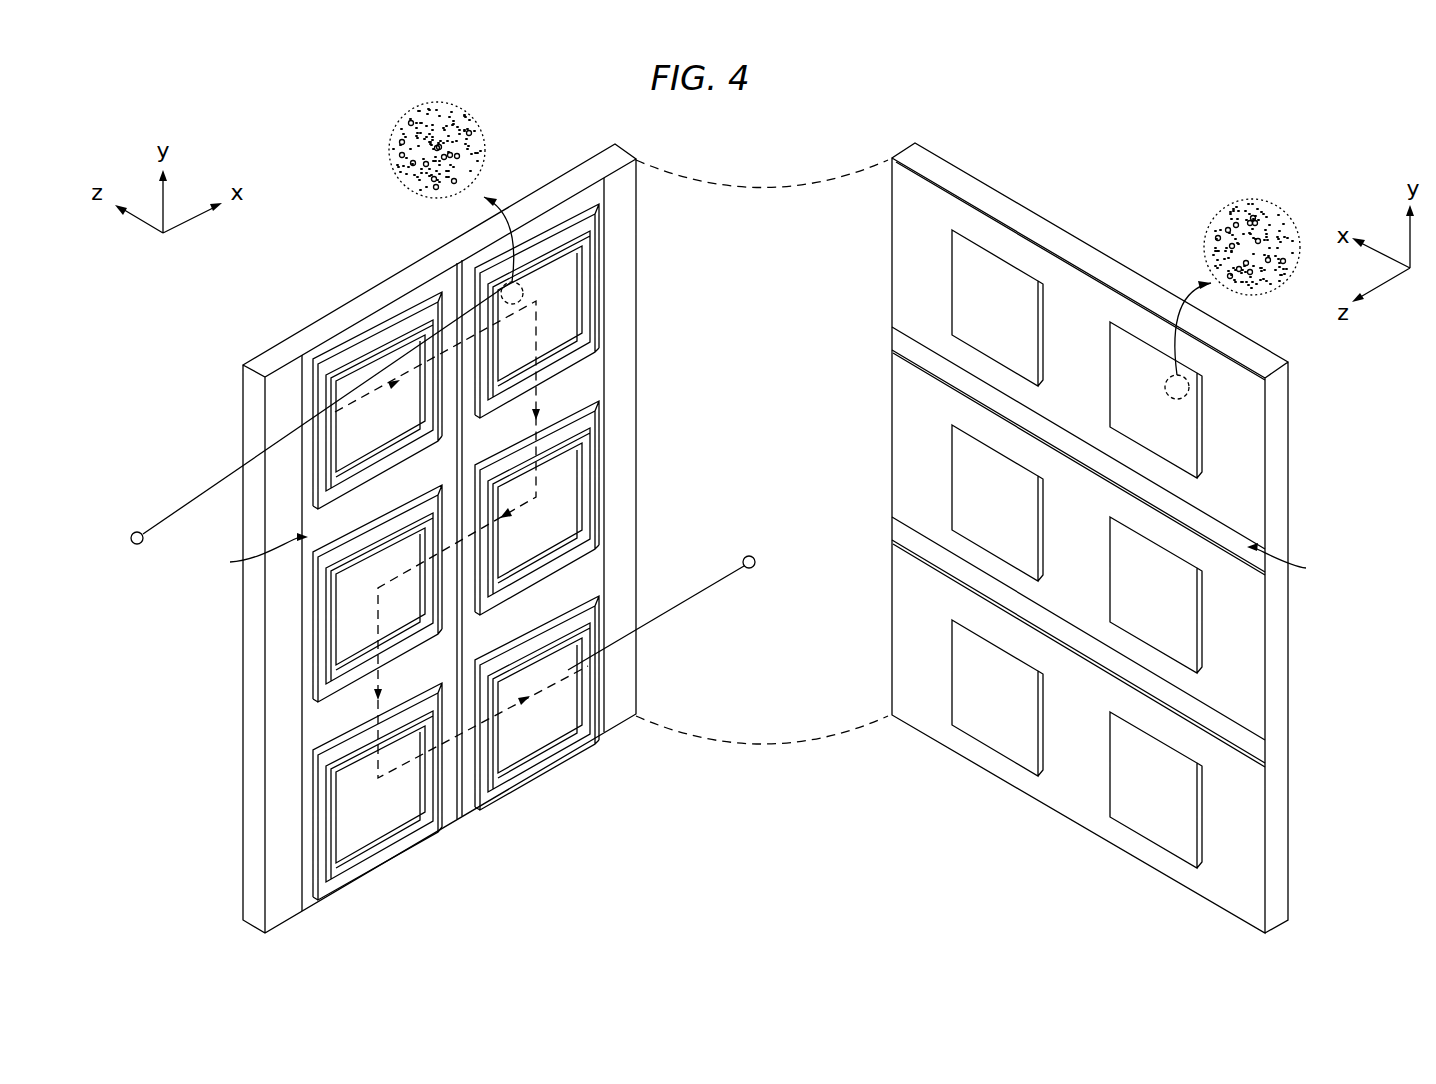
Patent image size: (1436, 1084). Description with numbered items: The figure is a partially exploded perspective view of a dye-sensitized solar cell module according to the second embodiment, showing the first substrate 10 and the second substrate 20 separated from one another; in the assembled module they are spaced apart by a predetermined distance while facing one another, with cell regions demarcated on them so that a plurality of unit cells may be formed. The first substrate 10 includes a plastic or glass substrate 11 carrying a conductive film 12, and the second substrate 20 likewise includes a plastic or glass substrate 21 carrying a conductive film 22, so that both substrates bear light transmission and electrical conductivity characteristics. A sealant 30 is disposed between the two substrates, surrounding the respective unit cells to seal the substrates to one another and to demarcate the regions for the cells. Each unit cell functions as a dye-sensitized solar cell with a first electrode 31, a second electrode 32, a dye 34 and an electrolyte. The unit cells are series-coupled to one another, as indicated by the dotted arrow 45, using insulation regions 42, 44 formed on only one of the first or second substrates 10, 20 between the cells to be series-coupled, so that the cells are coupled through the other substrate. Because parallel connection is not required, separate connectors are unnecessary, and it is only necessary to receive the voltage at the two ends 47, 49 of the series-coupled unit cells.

The first substrate 10 is at (439, 538).
The plastic or glass substrate 11 is at (311, 334).
The conductive film 12 is at (337, 331).
The second substrate 20 is at (1090, 538).
The plastic or glass substrate 21 is at (1061, 237).
The conductive film 22 is at (1086, 172).
The sealant 30 is at (397, 327).
The first electrode 31 is at (355, 590).
The second electrode 32 is at (353, 398).
The dye 34 is at (388, 150).
The insulation region 42 is at (250, 556).
The insulation region 44 is at (1296, 564).
The dotted arrow 45 is at (537, 388).
The end 47 is at (288, 413).
The end 49 is at (691, 613).